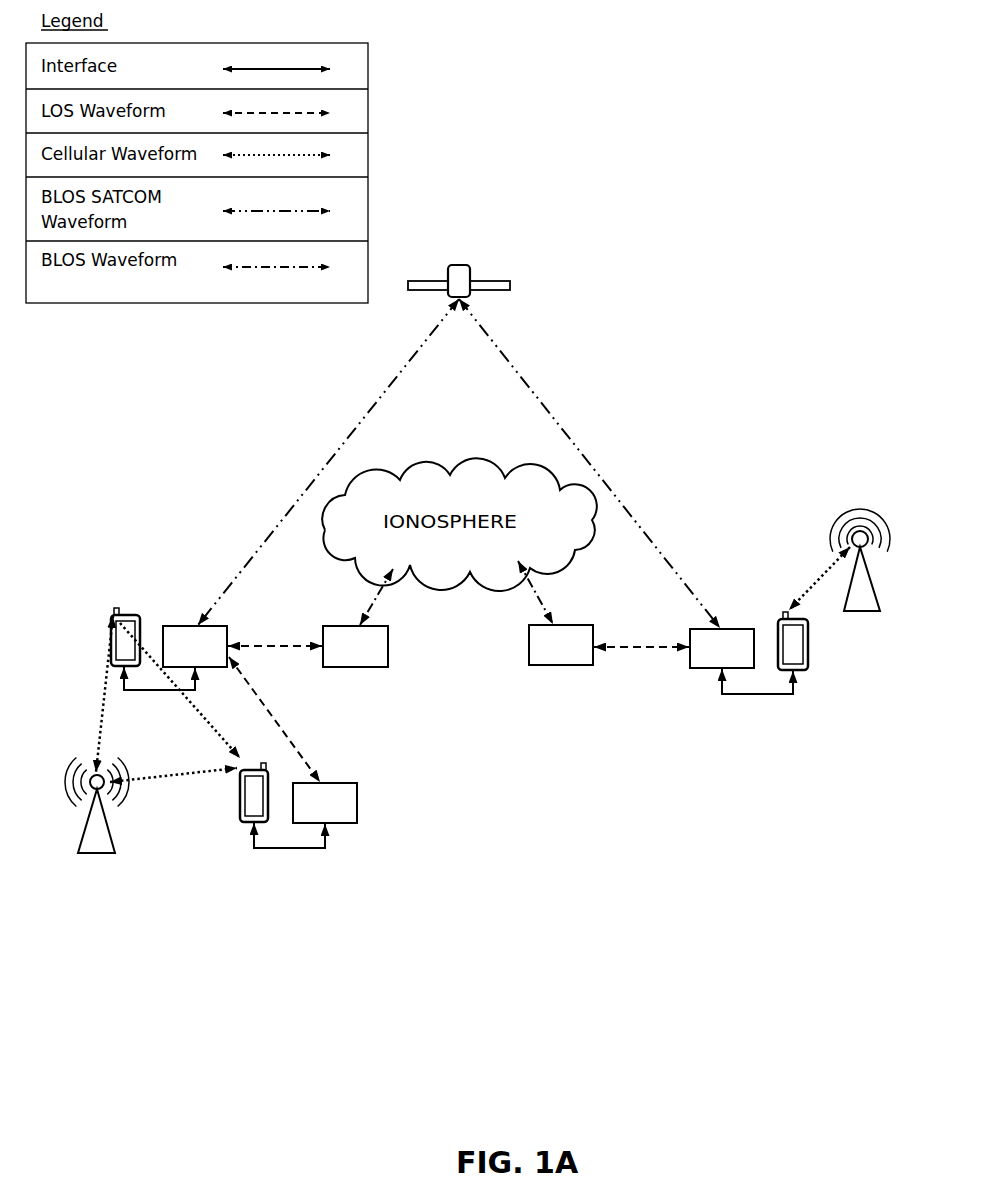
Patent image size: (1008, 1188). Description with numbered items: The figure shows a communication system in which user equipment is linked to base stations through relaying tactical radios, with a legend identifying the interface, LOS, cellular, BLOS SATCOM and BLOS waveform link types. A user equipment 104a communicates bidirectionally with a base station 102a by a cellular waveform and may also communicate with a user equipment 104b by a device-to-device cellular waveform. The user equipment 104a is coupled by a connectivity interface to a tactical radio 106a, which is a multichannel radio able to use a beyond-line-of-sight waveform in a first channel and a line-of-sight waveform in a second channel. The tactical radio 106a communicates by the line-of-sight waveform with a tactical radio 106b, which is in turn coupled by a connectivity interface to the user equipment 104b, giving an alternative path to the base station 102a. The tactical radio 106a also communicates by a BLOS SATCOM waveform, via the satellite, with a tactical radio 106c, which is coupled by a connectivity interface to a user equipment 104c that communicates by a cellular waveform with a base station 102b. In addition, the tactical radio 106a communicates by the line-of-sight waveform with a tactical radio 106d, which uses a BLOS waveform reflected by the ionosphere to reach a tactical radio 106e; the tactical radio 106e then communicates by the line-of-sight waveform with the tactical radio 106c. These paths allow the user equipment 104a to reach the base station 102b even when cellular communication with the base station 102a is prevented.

The base station 102a is at (94, 855).
The base station 102b is at (858, 531).
The user equipment 104a is at (131, 615).
The user equipment 104b is at (240, 812).
The user equipment 104c is at (809, 659).
The tactical radio 106a is at (180, 626).
The tactical radio 106b is at (360, 810).
The tactical radio 106c is at (697, 670).
The tactical radio 106d is at (336, 668).
The tactical radio 106e is at (540, 666).